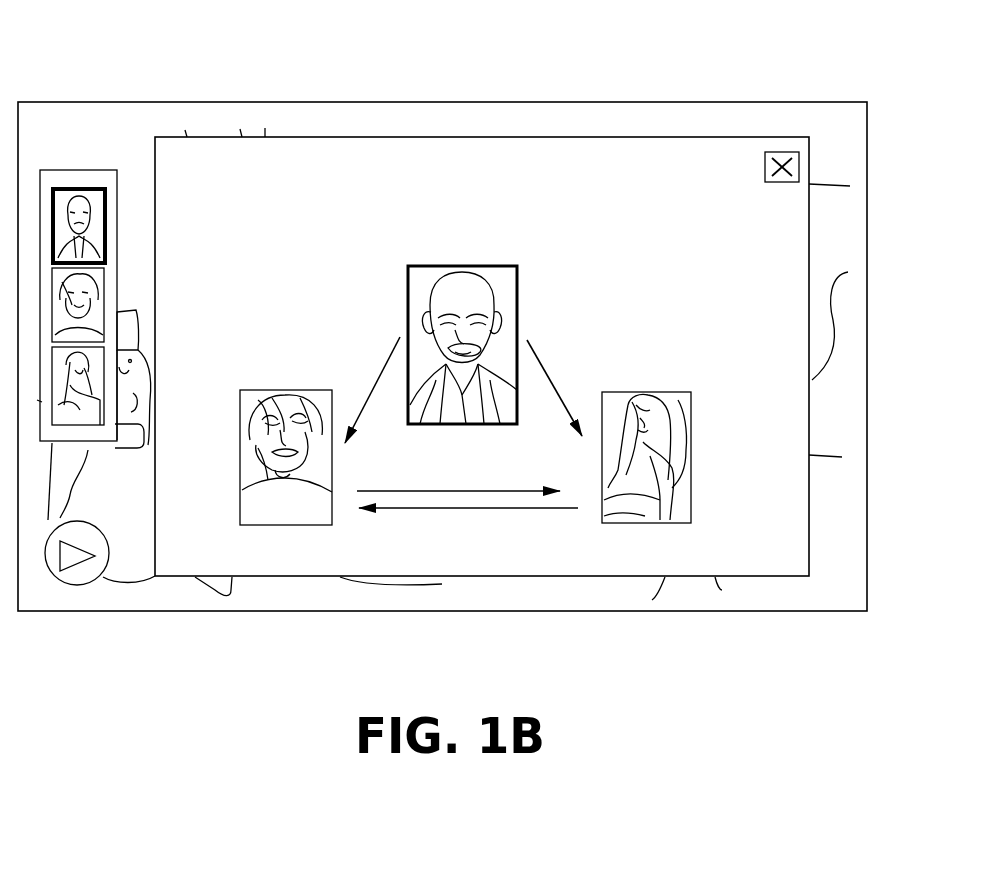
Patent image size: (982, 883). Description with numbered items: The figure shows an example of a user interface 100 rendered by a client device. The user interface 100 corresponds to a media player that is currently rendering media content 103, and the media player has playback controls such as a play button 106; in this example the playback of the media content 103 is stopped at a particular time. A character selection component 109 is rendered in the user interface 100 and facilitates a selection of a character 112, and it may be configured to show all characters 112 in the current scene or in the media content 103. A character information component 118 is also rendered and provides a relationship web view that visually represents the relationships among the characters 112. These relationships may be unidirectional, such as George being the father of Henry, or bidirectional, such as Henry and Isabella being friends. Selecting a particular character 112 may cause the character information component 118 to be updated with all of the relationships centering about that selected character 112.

The user interface 100 is at (720, 649).
The media content 103 is at (283, 594).
The play button 106 is at (77, 573).
The character selection component 109 is at (53, 173).
The character 112 is at (91, 185).
The character information component 118 is at (247, 180).